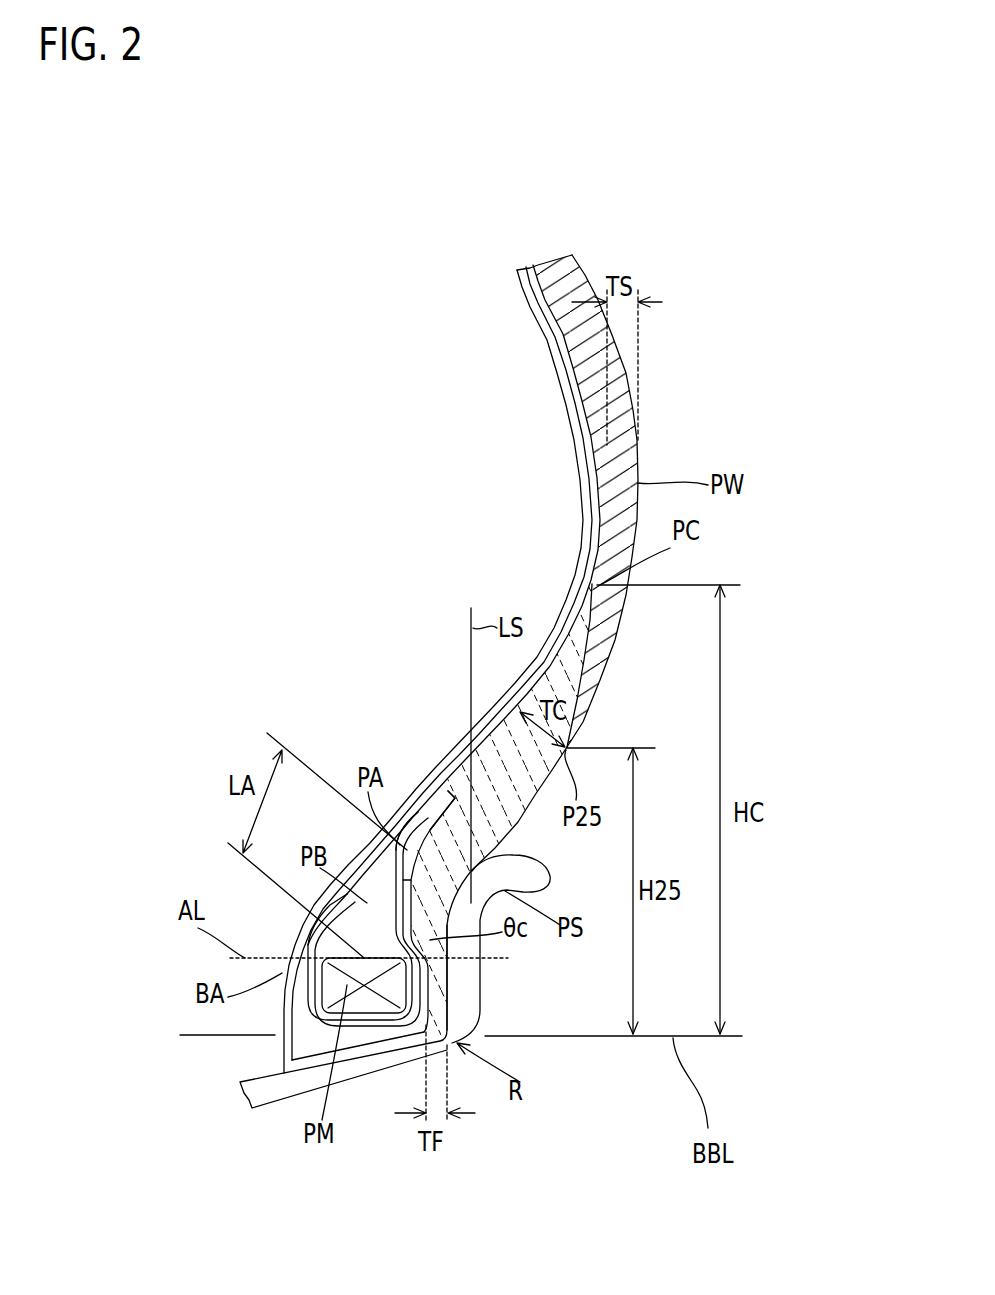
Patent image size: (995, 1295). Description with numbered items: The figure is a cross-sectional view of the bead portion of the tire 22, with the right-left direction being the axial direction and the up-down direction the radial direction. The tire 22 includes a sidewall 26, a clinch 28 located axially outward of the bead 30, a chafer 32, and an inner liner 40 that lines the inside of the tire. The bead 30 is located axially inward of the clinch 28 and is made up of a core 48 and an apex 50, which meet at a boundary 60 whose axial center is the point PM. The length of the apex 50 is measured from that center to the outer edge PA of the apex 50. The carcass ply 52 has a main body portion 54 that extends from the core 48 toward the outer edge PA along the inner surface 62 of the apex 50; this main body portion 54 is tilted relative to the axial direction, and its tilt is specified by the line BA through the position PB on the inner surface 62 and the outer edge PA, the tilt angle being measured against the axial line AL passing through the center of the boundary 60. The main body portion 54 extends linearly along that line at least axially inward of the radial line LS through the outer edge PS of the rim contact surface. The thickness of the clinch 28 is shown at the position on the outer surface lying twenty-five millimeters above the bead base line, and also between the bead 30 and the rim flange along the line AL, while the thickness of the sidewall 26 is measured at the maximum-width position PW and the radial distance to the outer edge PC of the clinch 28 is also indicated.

The tire 22 is at (718, 205).
The sidewall 26 is at (627, 453).
The clinch 28 is at (500, 815).
The bead 30 is at (318, 937).
The chafer 32 is at (287, 1047).
The inner liner 40 is at (584, 467).
The core 48 is at (369, 1005).
The apex 50 is at (323, 915).
The carcass ply 52 is at (413, 855).
The main body portion 54 is at (433, 800).
The boundary 60 is at (428, 981).
The inner surface 62 is at (383, 866).